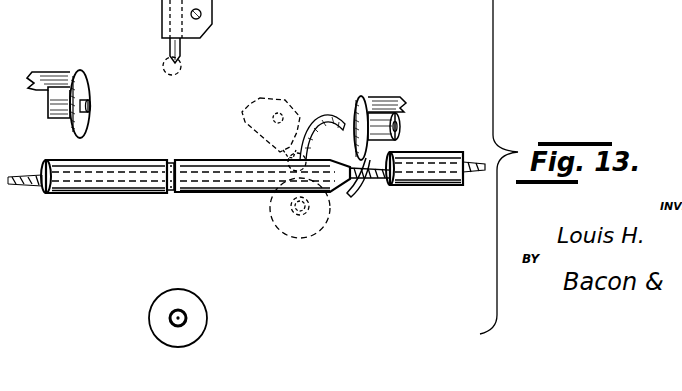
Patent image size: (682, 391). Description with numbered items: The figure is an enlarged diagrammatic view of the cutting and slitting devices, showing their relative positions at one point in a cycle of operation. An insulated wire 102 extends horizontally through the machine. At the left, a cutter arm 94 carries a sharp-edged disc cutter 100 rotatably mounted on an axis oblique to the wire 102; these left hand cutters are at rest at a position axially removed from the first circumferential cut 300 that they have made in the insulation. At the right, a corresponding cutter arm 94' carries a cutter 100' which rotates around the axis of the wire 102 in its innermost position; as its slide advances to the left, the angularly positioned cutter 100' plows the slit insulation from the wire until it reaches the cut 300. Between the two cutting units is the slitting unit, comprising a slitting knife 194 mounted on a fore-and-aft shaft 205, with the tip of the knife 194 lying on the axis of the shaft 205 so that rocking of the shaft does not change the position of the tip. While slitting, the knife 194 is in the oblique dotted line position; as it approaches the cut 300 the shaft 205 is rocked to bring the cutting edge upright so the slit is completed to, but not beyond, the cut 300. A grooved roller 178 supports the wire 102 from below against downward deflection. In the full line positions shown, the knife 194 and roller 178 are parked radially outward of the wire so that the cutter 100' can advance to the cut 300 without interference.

The cutter arm 94 is at (45, 95).
The disc cutter 100 is at (64, 106).
The insulated wire 102 is at (56, 196).
The first circumferential cut 300 is at (172, 162).
The slitting knife 194 is at (202, 40).
The shaft 205 is at (190, 62).
The grooved roller 178 is at (318, 218).
The cutters 100' is at (335, 135).
The cutter arm 94' is at (387, 103).